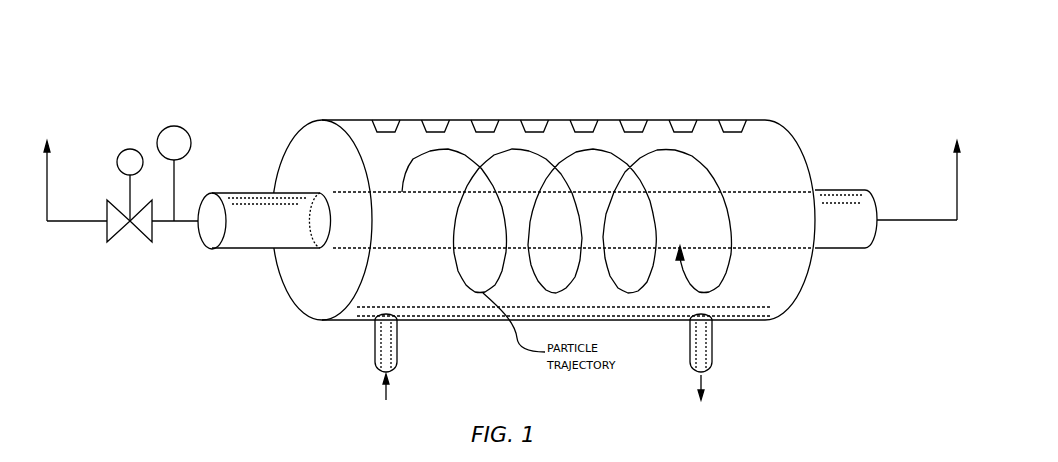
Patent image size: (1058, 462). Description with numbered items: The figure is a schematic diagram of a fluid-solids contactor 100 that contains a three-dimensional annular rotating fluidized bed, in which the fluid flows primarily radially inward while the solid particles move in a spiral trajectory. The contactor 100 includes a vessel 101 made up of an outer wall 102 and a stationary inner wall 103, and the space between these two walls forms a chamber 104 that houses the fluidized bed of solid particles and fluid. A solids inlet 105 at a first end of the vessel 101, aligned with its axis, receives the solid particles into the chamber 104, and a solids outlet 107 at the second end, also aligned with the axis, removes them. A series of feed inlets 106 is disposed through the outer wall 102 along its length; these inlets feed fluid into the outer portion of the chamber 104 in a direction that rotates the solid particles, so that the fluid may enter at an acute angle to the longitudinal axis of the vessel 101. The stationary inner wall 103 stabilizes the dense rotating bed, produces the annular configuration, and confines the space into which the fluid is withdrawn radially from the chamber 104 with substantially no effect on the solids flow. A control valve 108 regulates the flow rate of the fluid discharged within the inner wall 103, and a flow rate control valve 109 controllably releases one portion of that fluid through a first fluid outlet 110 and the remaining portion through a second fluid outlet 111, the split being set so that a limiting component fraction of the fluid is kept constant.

The fluid-solids contactor 100 is at (862, 29).
The vessel 101 is at (825, 308).
The outer wall 102 is at (628, 322).
The stationary inner wall 103 is at (745, 250).
The chamber 104 is at (783, 143).
The solids inlet 105 is at (400, 345).
The feed inlets 106 is at (732, 119).
The solids outlet 107 is at (714, 345).
The control valve 108 is at (130, 227).
The flow rate control valve 109 is at (163, 131).
The first fluid outlet 110 is at (205, 237).
The second fluid outlet 111 is at (877, 242).